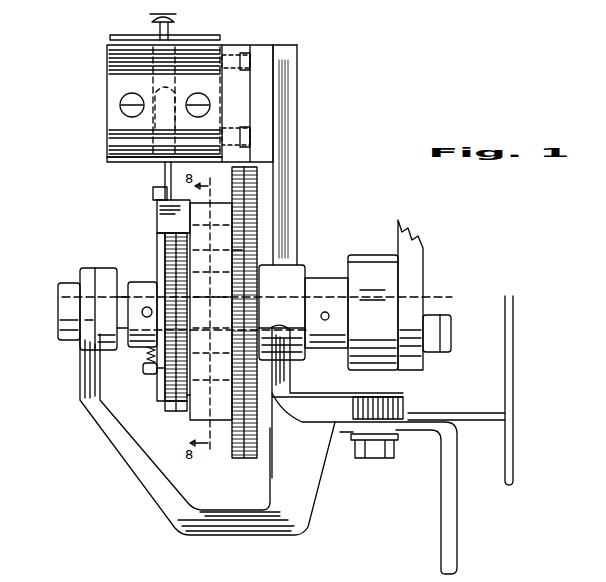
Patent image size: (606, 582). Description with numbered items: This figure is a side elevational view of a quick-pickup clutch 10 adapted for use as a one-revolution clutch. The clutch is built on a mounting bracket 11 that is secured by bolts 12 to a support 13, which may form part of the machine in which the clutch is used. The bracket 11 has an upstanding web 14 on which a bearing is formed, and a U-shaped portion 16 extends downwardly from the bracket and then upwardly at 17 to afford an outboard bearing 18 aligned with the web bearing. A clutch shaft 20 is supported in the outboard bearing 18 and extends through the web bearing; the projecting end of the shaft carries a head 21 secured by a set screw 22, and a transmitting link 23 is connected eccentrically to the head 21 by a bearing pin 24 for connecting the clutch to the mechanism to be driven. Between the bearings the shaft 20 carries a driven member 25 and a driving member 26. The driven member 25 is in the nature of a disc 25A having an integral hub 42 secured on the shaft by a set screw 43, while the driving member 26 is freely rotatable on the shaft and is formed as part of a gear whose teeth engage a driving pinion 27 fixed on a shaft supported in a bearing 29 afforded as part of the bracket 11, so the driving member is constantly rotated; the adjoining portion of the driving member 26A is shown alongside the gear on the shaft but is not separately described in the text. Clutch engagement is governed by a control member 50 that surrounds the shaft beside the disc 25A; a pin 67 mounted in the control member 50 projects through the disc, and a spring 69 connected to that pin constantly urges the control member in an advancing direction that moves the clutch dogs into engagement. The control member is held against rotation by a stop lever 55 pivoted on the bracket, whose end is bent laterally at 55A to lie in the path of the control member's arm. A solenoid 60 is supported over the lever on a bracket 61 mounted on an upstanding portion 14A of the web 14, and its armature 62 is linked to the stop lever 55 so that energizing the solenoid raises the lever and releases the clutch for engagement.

The quick-pickup clutch 10 is at (120, 483).
The mounting bracket 11 is at (400, 401).
The bolts 12 is at (371, 458).
The support 13 is at (429, 430).
The upstanding web 14 is at (287, 377).
The upstanding portion of the web 14A is at (288, 120).
The U-shaped portion 16 is at (265, 522).
The upwardly extending part of the U-shaped portion 17 is at (88, 386).
The outboard bearing 18 is at (80, 273).
The clutch shaft 20 is at (120, 297).
The head 21 is at (363, 263).
The set screw 22 is at (325, 316).
The transmitting link 23 is at (423, 277).
The bearing pin 24 is at (451, 334).
The driven member 25 is at (160, 396).
The disc 25A is at (173, 401).
The driving member 26 is at (226, 433).
The gear hub 26A is at (244, 213).
The driving pinion 27 is at (245, 263).
The bearing 29 is at (293, 275).
The hub 42 is at (120, 328).
The set screw 43 is at (147, 312).
The control member 50 is at (185, 391).
The stop lever 55 is at (157, 260).
The laterally bent end of the stop lever 55A is at (172, 210).
The solenoid 60 is at (107, 79).
The bracket 61 is at (230, 50).
The armature 62 is at (157, 169).
The pin 67 is at (155, 378).
The spring 69 is at (147, 350).